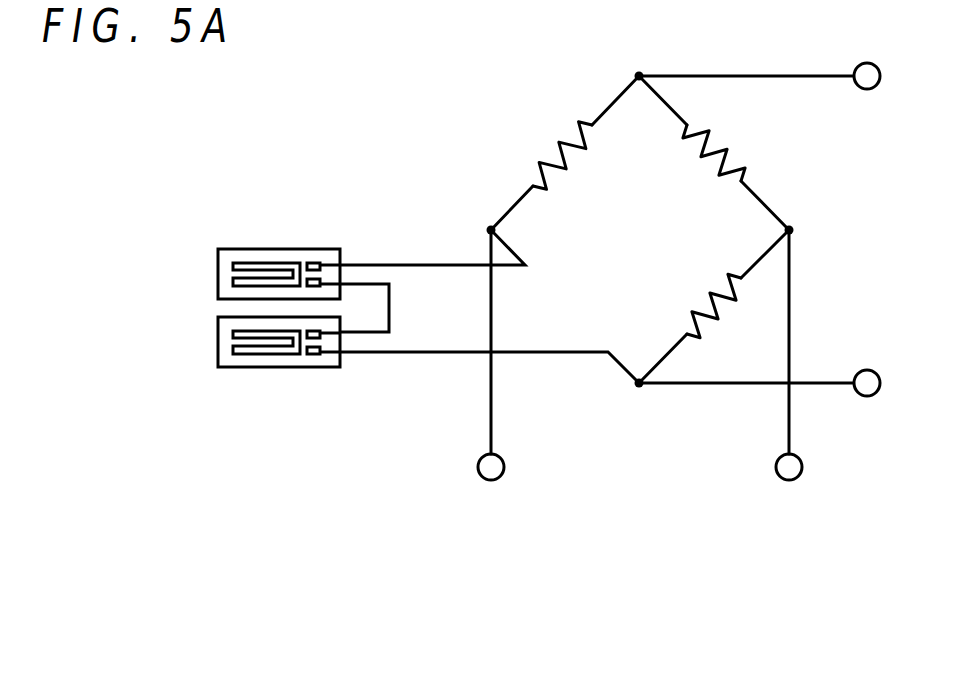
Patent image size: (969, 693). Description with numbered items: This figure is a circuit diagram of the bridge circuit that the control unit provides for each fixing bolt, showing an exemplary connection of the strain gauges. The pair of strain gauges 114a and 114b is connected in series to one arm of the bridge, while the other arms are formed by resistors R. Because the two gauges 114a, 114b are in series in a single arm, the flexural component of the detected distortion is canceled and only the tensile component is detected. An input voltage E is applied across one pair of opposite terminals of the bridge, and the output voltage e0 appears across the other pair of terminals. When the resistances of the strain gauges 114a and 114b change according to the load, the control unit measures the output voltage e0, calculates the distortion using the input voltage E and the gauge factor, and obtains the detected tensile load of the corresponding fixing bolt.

The strain gauge 114a is at (218, 270).
The strain gauge 114b is at (218, 342).
The resistor R is at (640, 229).
The input voltage E is at (775, 467).
The output voltage e0 is at (867, 369).